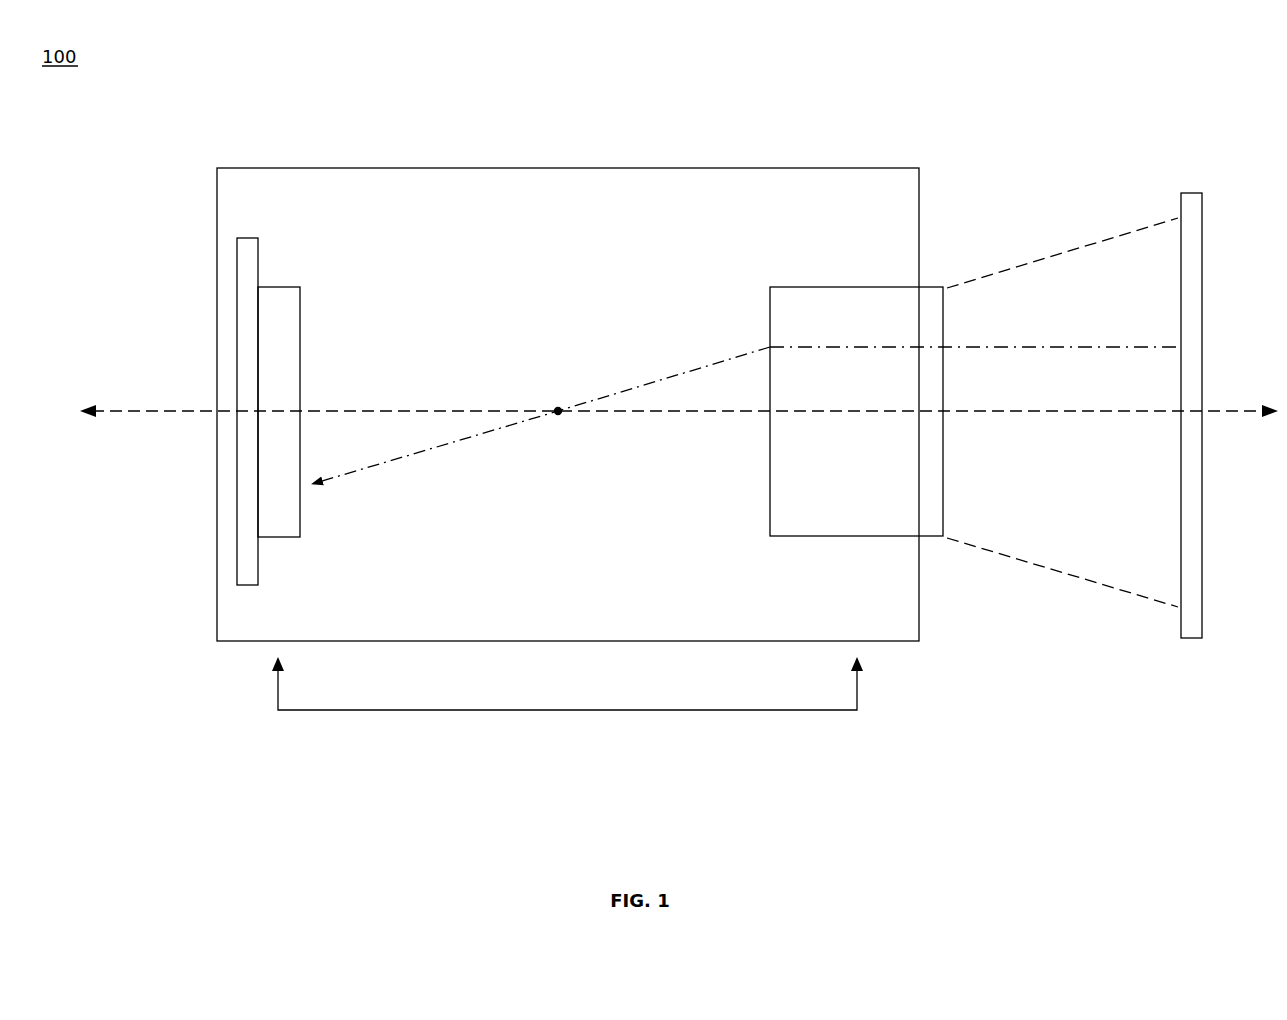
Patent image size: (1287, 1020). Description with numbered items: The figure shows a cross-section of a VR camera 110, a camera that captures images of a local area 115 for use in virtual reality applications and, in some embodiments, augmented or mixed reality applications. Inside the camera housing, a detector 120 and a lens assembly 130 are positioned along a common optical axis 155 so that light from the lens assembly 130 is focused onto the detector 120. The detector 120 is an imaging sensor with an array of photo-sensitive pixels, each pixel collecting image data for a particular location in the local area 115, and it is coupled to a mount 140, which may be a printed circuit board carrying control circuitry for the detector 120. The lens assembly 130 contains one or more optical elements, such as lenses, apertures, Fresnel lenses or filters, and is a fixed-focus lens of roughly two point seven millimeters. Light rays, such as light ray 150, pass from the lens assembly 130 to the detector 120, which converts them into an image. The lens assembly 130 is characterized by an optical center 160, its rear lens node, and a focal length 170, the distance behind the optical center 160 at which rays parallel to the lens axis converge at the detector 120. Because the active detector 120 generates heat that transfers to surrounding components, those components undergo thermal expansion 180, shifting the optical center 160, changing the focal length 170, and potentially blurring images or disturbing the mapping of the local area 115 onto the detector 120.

The VR camera 110 is at (270, 138).
The local area 115 is at (948, 185).
The detector 120 is at (302, 295).
The lens assembly 130 is at (886, 285).
The mount 140 is at (237, 243).
The light ray 150 is at (680, 375).
The optical axis 155 is at (163, 413).
The optical center 160 is at (558, 406).
The focal length 170 is at (551, 395).
The thermal expansion 180 is at (567, 713).